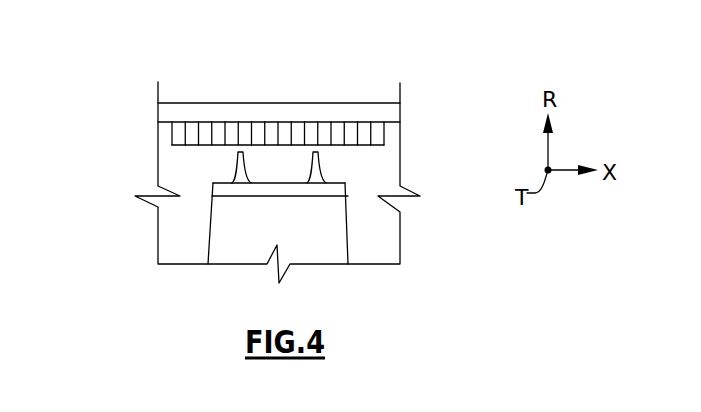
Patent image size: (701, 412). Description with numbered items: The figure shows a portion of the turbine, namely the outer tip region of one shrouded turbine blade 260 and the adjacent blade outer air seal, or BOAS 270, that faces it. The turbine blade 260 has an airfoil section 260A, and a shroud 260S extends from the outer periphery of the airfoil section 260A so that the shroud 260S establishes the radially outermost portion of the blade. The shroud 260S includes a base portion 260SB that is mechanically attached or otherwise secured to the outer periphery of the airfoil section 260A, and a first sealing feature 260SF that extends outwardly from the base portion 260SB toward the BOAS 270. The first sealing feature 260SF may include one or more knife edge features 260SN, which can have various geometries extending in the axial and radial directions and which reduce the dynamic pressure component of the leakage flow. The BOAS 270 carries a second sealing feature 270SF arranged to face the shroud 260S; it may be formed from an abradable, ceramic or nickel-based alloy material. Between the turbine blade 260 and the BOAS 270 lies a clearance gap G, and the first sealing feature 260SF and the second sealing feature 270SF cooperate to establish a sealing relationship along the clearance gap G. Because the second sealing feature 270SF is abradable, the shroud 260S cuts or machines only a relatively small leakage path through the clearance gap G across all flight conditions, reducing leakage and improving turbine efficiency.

The shrouded turbine blade 260 is at (348, 245).
The airfoil section 260A is at (337, 220).
The shroud 260S is at (351, 180).
The base portion 260SB is at (348, 195).
The first sealing feature 260SF is at (229, 171).
The surface nanostructures 260SN is at (310, 173).
The BOAS 270 is at (358, 103).
The second sealing feature 270SF is at (384, 132).
The clearance gap G is at (180, 177).